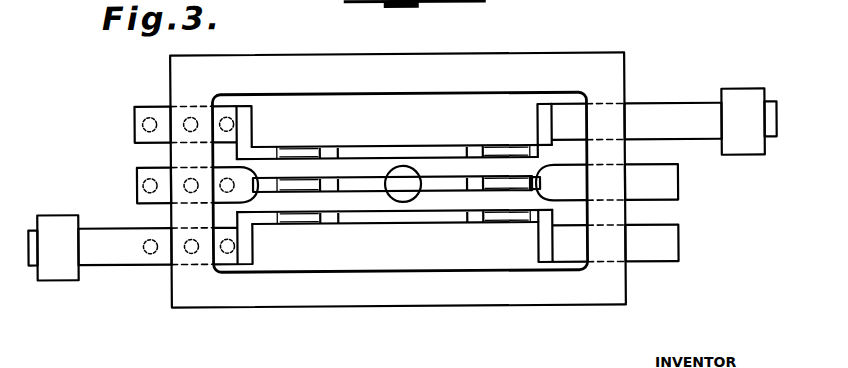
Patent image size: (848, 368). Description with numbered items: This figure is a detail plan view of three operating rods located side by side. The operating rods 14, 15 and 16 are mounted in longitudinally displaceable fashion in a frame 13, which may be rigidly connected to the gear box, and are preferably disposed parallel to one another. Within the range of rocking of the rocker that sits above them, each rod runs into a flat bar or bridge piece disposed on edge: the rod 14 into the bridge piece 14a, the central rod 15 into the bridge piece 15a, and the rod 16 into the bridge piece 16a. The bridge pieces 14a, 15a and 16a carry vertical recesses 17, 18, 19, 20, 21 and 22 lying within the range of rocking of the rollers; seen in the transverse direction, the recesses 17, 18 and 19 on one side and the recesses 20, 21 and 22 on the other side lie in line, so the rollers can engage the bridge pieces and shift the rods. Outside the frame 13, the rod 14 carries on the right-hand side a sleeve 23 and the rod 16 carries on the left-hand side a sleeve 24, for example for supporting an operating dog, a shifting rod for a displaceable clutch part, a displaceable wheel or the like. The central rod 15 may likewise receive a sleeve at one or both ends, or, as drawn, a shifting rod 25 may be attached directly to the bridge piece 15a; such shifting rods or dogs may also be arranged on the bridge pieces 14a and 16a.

The frame 13 is at (525, 65).
The operating rod 14 is at (138, 123).
The bridge piece 14a is at (383, 145).
The operating rod 15 is at (137, 185).
The bridge piece 15a is at (438, 180).
The operating rod 16 is at (126, 258).
The bridge piece 16a is at (437, 220).
The vertical recess 17 is at (310, 153).
The vertical recess 18 is at (288, 180).
The vertical recess 19 is at (300, 222).
The vertical recess 20 is at (503, 150).
The vertical recess 21 is at (493, 185).
The vertical recess 22 is at (508, 220).
The sleeve 23 is at (753, 148).
The sleeve 24 is at (63, 273).
The shifting rod 25 is at (402, 201).